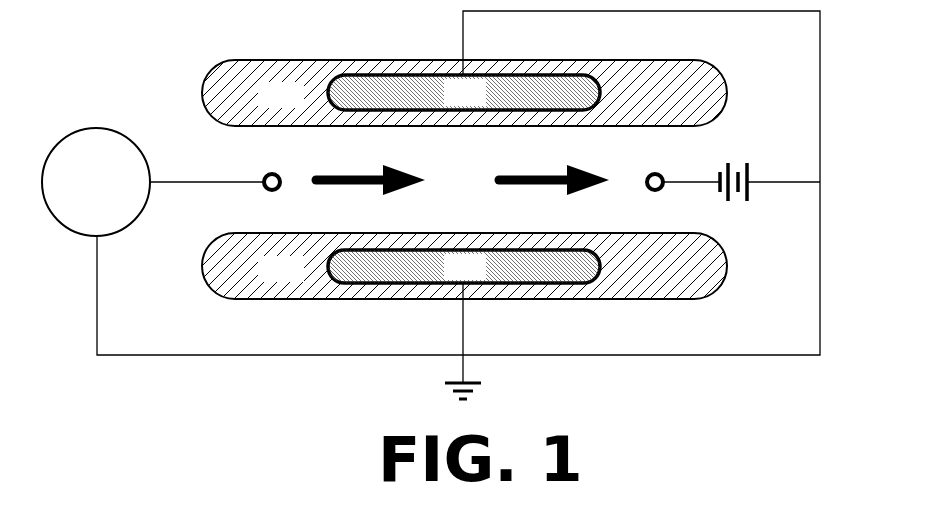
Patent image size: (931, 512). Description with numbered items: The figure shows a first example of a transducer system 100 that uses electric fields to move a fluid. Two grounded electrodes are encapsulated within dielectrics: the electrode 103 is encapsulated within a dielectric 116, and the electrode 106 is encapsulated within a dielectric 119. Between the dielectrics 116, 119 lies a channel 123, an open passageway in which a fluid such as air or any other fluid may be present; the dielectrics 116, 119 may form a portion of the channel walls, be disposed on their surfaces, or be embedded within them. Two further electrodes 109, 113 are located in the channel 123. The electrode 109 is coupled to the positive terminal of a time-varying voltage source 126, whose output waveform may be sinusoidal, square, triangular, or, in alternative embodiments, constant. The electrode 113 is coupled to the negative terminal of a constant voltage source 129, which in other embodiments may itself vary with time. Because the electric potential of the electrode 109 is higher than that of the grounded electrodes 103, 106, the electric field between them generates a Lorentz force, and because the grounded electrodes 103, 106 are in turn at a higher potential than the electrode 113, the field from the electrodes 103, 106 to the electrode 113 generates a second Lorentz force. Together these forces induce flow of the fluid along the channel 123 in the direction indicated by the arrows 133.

The transducer system 100 is at (753, 303).
The electrode 103 is at (464, 92).
The electrode 106 is at (464, 266).
The electrode 109 is at (268, 172).
The electrode 113 is at (653, 171).
The dielectric 116 is at (464, 93).
The dielectric 119 is at (464, 266).
The channel 123 is at (207, 223).
The time-varying voltage source 126 is at (46, 209).
The constant voltage source 129 is at (737, 203).
The arrows 133 is at (500, 175).